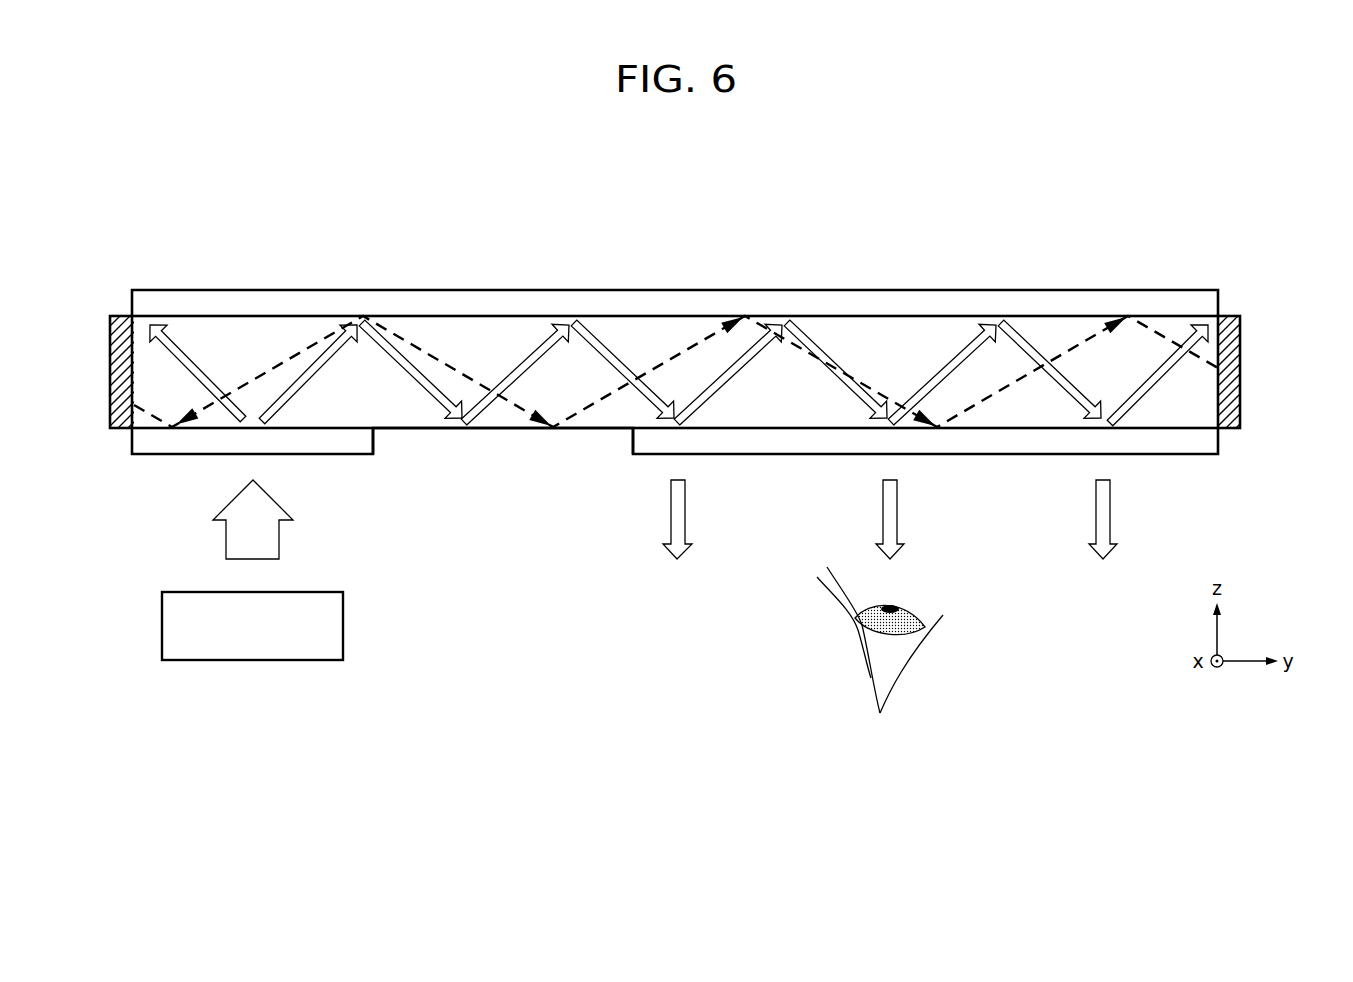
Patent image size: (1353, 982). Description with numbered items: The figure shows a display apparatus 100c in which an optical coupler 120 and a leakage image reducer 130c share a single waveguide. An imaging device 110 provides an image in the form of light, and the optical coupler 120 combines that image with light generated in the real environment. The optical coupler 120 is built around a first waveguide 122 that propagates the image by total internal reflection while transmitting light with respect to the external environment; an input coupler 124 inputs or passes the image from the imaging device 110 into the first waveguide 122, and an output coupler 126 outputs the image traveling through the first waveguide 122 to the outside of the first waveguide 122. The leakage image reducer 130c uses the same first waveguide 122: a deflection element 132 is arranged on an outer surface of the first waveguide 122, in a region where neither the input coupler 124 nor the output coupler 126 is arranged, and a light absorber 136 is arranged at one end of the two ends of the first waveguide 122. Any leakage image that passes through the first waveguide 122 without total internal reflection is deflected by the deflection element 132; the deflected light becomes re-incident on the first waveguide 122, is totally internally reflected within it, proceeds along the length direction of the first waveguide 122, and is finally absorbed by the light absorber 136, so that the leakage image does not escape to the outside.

The display apparatus 100c is at (1200, 137).
The imaging device 110 is at (253, 643).
The optical coupler 120 is at (620, 431).
The first waveguide 122 is at (503, 423).
The input coupler 124 is at (357, 440).
The output coupler 126 is at (606, 503).
The leakage image reducer 130c is at (749, 291).
The deflection element 132 is at (999, 308).
The light absorber 136 is at (1227, 324).